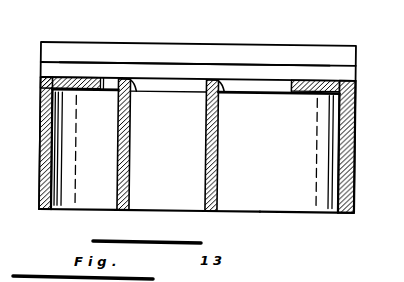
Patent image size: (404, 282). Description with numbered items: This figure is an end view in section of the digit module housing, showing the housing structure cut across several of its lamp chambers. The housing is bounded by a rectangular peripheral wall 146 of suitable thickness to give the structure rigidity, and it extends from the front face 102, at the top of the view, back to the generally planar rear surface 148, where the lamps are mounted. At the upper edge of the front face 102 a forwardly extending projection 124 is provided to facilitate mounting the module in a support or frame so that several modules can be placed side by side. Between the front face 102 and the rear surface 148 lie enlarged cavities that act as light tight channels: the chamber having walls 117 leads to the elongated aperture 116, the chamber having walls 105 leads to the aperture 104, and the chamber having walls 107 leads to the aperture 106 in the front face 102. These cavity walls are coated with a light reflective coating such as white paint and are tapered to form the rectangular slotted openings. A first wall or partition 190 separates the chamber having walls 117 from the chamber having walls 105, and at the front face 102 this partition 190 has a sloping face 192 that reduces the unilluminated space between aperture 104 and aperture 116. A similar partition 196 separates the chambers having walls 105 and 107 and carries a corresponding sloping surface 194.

The front face 102 is at (340, 78).
The elongated aperture 104 is at (182, 84).
The cavity walls 105 is at (149, 204).
The elongated aperture 106 is at (272, 82).
The cavity walls 107 is at (283, 200).
The elongated aperture 116 is at (103, 87).
The cavity walls 117 is at (69, 208).
The upper projection 124 is at (153, 53).
The rectangular peripheral wall 146 is at (42, 174).
The rear surface 148 is at (227, 207).
The first wall or partition 190 is at (118, 179).
The sloping face 192 is at (133, 88).
The sloping surface 194 is at (222, 88).
The partition 196 is at (221, 163).